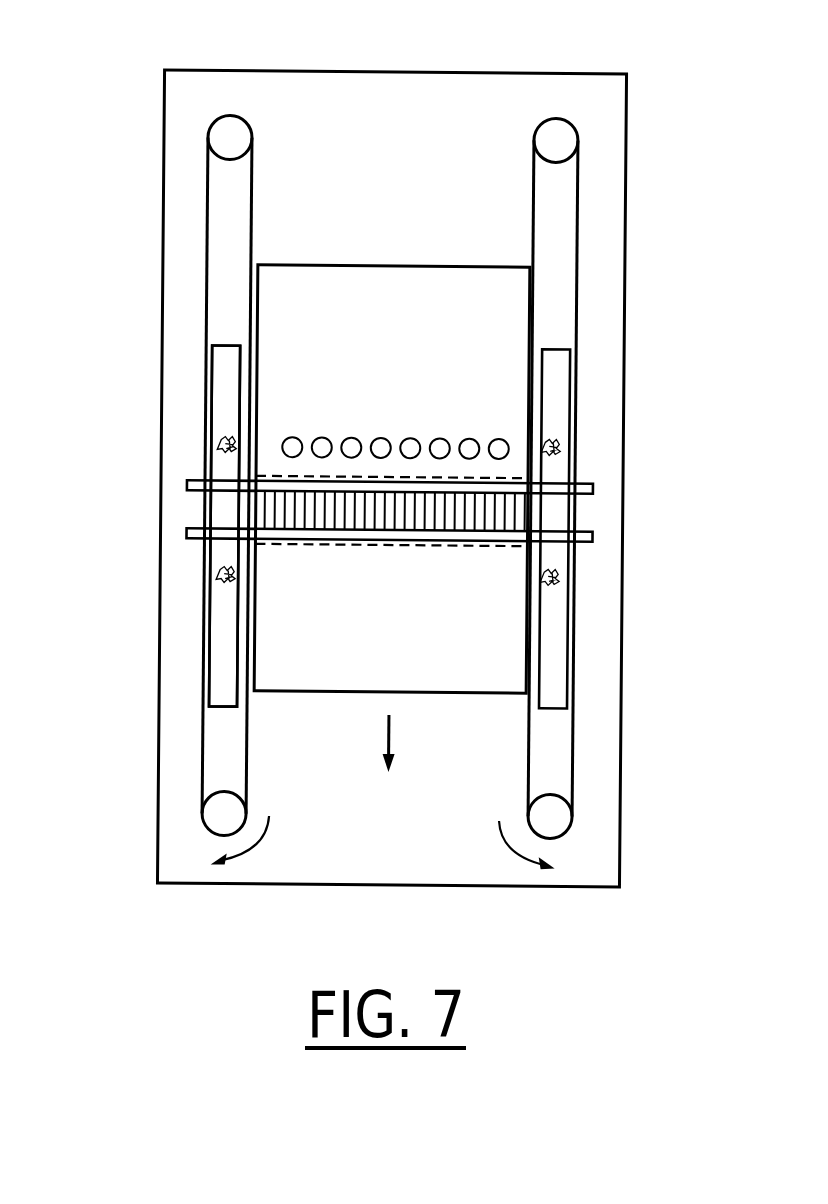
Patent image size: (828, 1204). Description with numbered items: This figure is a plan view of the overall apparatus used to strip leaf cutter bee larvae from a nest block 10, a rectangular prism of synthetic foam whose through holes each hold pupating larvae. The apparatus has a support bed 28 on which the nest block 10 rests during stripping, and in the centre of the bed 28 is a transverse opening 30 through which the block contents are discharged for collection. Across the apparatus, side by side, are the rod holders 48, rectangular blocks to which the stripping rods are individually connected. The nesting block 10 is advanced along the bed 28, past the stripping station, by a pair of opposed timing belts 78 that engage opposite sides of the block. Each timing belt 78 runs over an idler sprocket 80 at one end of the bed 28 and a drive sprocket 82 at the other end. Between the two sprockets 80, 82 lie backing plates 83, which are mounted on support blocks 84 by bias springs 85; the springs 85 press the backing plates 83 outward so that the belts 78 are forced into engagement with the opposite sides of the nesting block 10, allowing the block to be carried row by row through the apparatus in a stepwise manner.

The leaf cutter bee nest block 10 is at (490, 572).
The support bed 28 is at (625, 512).
The transverse opening 30 is at (308, 546).
The rod holder 48 is at (290, 513).
The timing belt 78 is at (222, 732).
The idler sprocket 80 is at (555, 137).
The drive sprocket 82 is at (222, 816).
The backing plate 83 is at (240, 382).
The support block 84 is at (213, 427).
The bias spring 85 is at (215, 444).